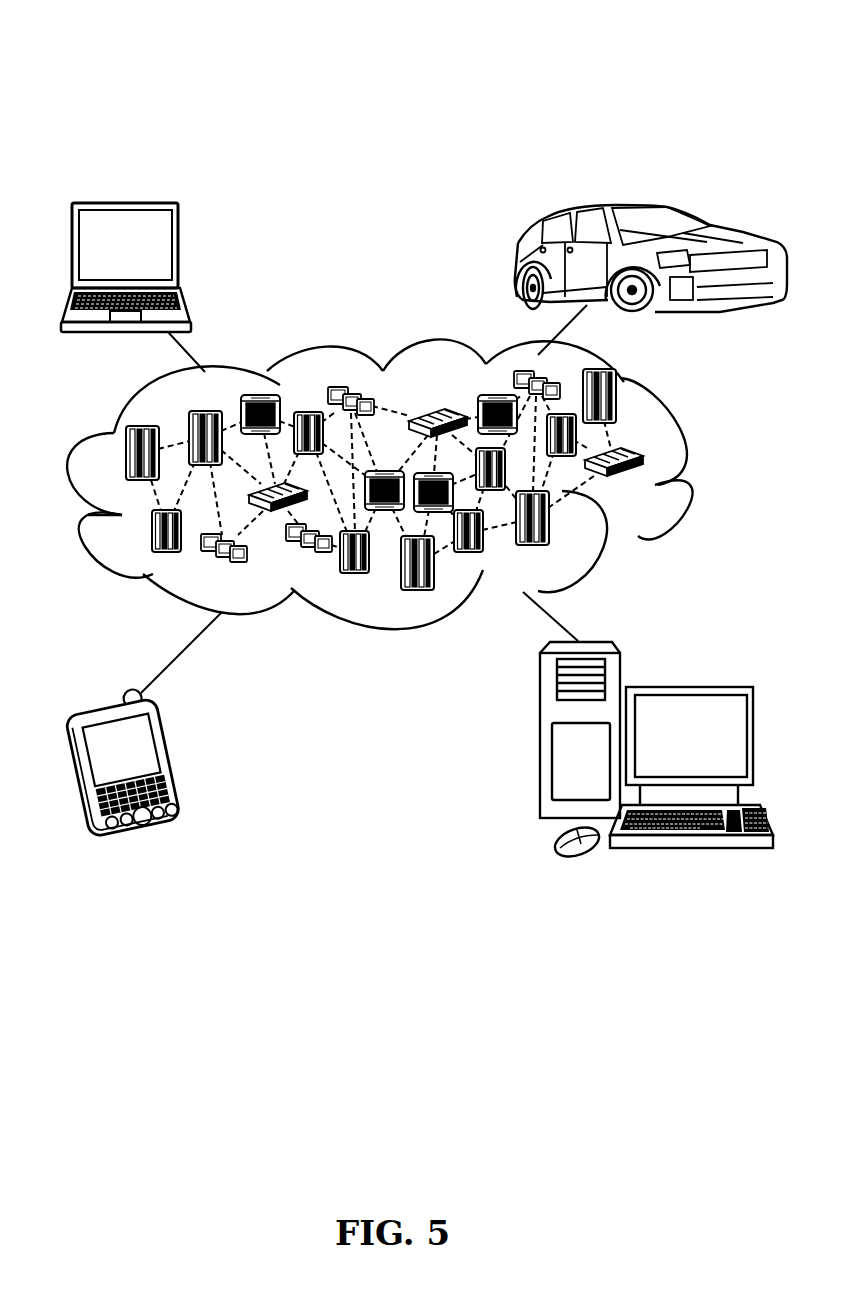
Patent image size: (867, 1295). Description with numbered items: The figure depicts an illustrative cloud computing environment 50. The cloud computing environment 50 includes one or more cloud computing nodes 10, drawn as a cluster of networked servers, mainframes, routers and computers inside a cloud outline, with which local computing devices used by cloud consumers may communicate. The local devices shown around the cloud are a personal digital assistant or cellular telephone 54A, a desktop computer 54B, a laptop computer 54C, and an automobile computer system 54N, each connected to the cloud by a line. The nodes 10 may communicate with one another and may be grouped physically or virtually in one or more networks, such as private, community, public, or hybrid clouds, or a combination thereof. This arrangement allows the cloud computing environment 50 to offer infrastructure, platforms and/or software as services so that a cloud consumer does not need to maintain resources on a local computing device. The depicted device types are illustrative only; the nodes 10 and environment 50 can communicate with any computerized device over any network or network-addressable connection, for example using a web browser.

The cloud computing environment 50 is at (308, 58).
The cloud computing nodes 10 is at (652, 489).
The personal digital assistant (PDA) or cellular telephone 54A is at (172, 756).
The desktop computer 54B is at (688, 685).
The laptop computer 54C is at (180, 250).
The automobile computer system 54N is at (520, 261).